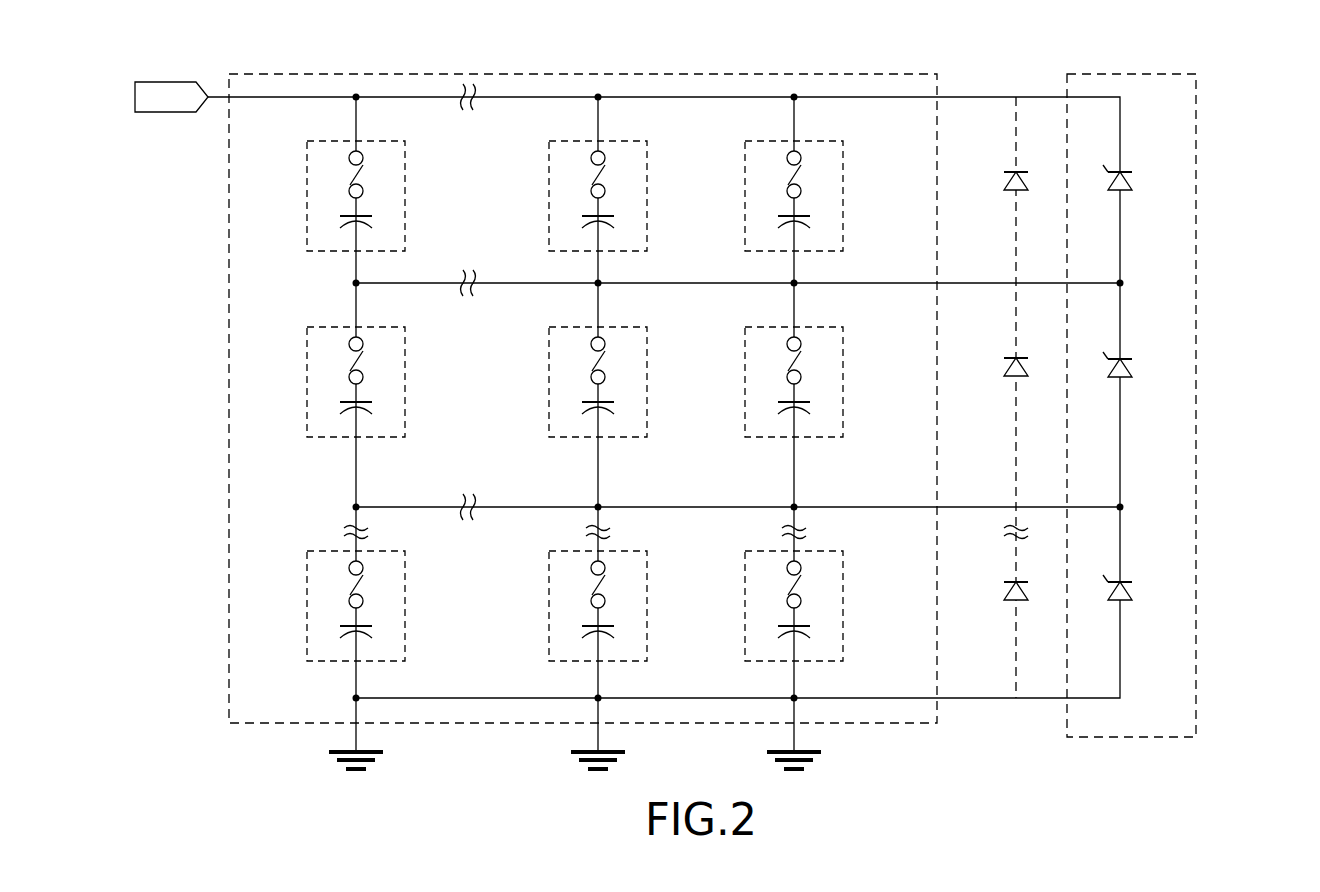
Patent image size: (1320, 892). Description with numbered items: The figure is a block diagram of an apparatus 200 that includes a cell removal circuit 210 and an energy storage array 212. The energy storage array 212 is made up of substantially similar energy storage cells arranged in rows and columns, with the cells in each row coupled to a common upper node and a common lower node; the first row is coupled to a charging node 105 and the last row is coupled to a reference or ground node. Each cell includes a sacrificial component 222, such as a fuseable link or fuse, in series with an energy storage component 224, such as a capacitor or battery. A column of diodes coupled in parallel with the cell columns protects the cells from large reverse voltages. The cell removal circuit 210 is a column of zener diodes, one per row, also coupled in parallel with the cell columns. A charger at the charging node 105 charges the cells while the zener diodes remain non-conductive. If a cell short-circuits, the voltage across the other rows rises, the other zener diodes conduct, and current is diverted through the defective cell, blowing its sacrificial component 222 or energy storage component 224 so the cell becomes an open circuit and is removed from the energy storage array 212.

The charging node 105 is at (152, 112).
The apparatus 200 is at (1306, 137).
The cell removal circuit 210 is at (1185, 74).
The energy storage array 212 is at (229, 352).
The sacrificial component 222 is at (305, 179).
The energy storage component 224 is at (304, 234).